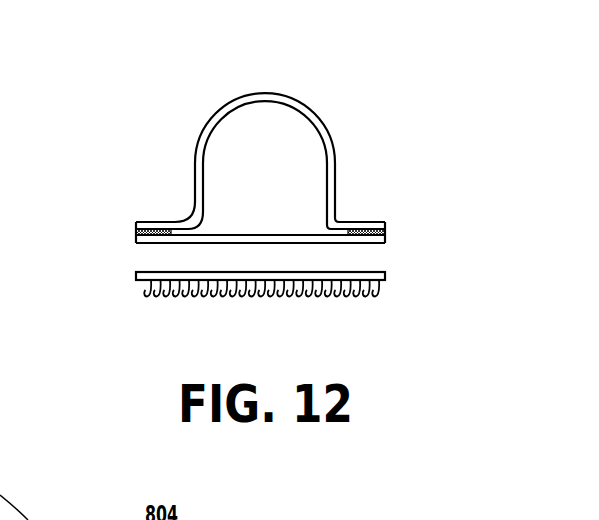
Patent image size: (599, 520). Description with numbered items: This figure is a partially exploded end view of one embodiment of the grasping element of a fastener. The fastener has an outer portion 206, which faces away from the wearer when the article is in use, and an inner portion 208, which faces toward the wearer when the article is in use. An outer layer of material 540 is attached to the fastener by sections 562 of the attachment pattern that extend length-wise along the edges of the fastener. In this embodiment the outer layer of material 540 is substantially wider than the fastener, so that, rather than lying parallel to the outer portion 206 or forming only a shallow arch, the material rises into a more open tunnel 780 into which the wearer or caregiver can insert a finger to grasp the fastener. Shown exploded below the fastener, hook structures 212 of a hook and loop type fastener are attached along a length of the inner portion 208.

The outer layer of material 540 is at (262, 93).
The open tunnel 780 is at (292, 138).
The sections 562 is at (368, 230).
The outer portion 206 is at (220, 235).
The inner portion 208 is at (150, 244).
The hook structures 212 is at (183, 297).